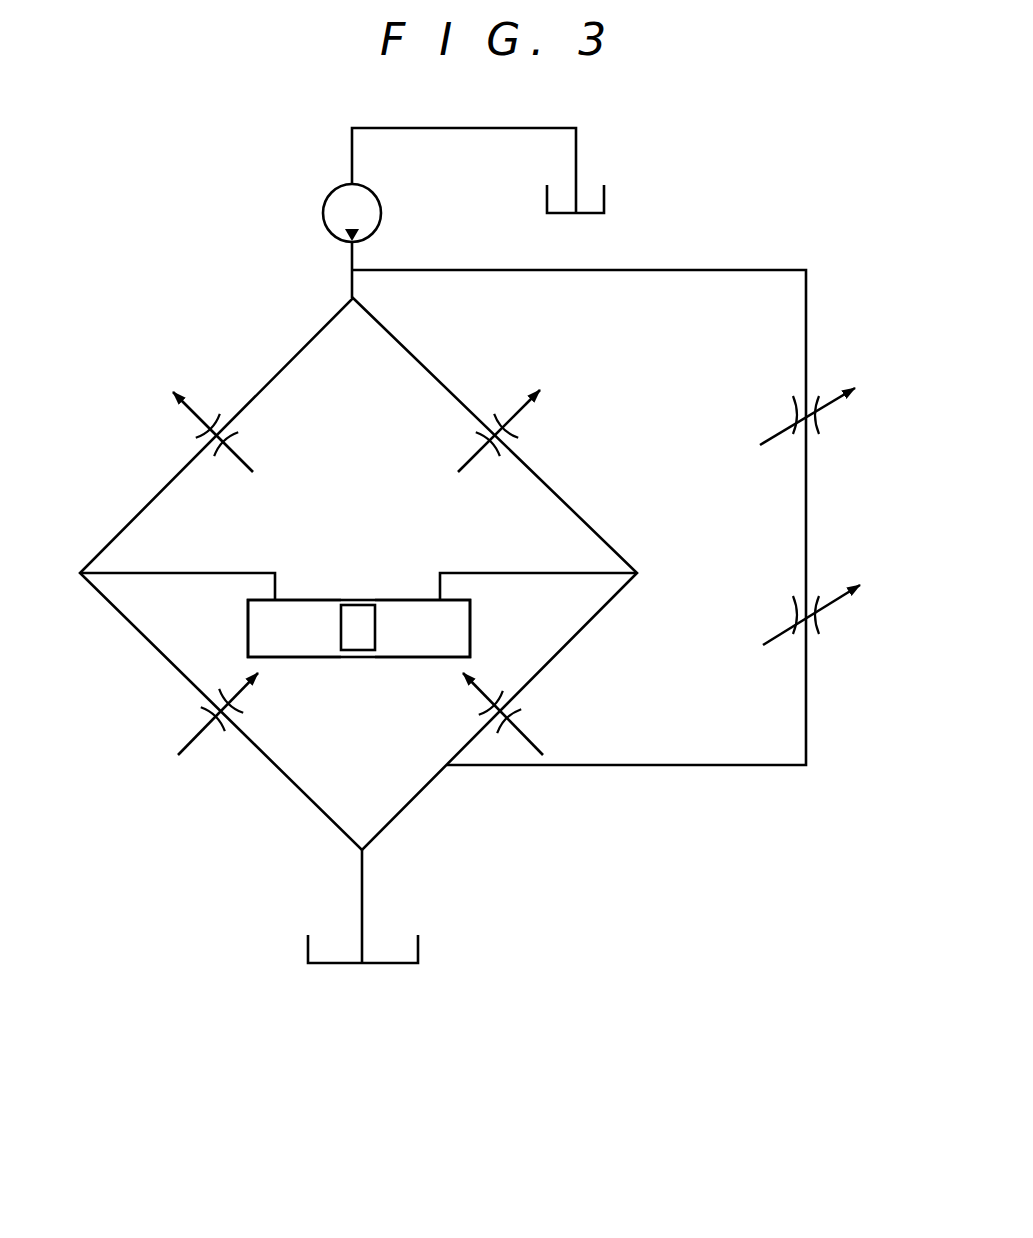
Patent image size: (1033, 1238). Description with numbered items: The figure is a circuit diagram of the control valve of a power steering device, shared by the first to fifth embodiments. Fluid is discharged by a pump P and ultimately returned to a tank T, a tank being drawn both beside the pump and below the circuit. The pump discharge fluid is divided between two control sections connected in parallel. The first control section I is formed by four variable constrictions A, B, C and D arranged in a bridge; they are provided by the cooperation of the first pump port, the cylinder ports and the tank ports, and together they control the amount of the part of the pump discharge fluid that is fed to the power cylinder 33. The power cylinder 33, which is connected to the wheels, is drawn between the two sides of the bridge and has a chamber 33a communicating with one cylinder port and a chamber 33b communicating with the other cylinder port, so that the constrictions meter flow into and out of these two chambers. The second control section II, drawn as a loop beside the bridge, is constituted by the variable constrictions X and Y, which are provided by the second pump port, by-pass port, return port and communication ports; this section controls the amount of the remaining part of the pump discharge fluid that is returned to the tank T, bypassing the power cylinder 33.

The first control section I is at (123, 468).
The second control section II is at (828, 507).
The pump P is at (372, 208).
The tank T is at (604, 200).
The variable constriction A is at (250, 451).
The variable constriction B is at (515, 444).
The variable constriction C is at (222, 727).
The variable constriction D is at (518, 705).
The variable constriction X is at (825, 376).
The variable constriction Y is at (826, 642).
The power cylinder 33 is at (348, 592).
The chamber 33a is at (320, 648).
The chamber 33b is at (427, 643).